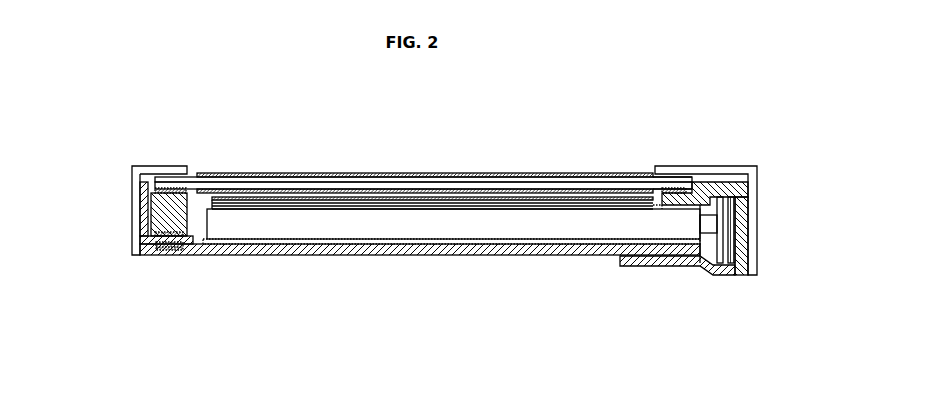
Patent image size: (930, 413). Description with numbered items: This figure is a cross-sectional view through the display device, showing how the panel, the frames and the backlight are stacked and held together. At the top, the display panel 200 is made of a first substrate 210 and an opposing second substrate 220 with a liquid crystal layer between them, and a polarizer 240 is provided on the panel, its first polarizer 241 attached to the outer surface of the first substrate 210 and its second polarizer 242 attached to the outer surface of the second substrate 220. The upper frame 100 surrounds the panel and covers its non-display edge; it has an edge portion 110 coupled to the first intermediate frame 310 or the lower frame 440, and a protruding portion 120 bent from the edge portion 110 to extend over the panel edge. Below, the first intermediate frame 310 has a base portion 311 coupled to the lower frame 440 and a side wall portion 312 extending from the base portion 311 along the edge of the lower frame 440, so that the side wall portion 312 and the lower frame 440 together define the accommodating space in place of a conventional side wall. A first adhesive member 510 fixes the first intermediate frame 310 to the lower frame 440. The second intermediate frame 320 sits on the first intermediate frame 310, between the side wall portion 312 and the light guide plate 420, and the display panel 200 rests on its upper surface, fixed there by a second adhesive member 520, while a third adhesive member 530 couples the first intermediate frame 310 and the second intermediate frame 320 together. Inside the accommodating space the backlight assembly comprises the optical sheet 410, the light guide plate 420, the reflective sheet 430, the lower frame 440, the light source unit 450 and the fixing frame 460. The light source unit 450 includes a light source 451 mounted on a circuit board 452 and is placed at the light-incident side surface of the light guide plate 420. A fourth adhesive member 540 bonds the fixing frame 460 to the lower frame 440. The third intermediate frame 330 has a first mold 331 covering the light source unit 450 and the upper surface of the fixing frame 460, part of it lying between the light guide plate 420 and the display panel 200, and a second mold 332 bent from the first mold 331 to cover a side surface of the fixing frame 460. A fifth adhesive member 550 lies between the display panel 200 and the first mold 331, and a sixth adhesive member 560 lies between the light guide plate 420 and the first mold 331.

The upper frame 100 is at (424, 179).
The edge portion 110 is at (132, 187).
The protruding portion 120 is at (148, 168).
The display panel 200 is at (423, 146).
The first substrate 210 is at (325, 133).
The second substrate 220 is at (323, 176).
The polarizer 240 is at (425, 148).
The first polarizer 241 is at (497, 175).
The second polarizer 242 is at (498, 133).
The first intermediate frame 310 is at (108, 226).
The base portion 311 is at (150, 248).
The side wall portion 312 is at (143, 213).
The second intermediate frame 320 is at (165, 203).
The third intermediate frame 330 is at (722, 184).
The first mold 331 is at (713, 184).
The second mold 332 is at (744, 215).
The optical sheet 410 is at (448, 200).
The light guide plate 420 is at (548, 224).
The reflective sheet 430 is at (335, 210).
The lower frame 440 is at (247, 250).
The light source unit 450 is at (724, 268).
The light source 451 is at (720, 232).
The circuit board 452 is at (732, 235).
The fixing frame 460 is at (737, 230).
The first adhesive member 510 is at (157, 250).
The second adhesive member 520 is at (163, 190).
The third adhesive member 530 is at (173, 250).
The fourth adhesive member 540 is at (663, 264).
The fifth adhesive member 550 is at (668, 185).
The sixth adhesive member 560 is at (682, 188).